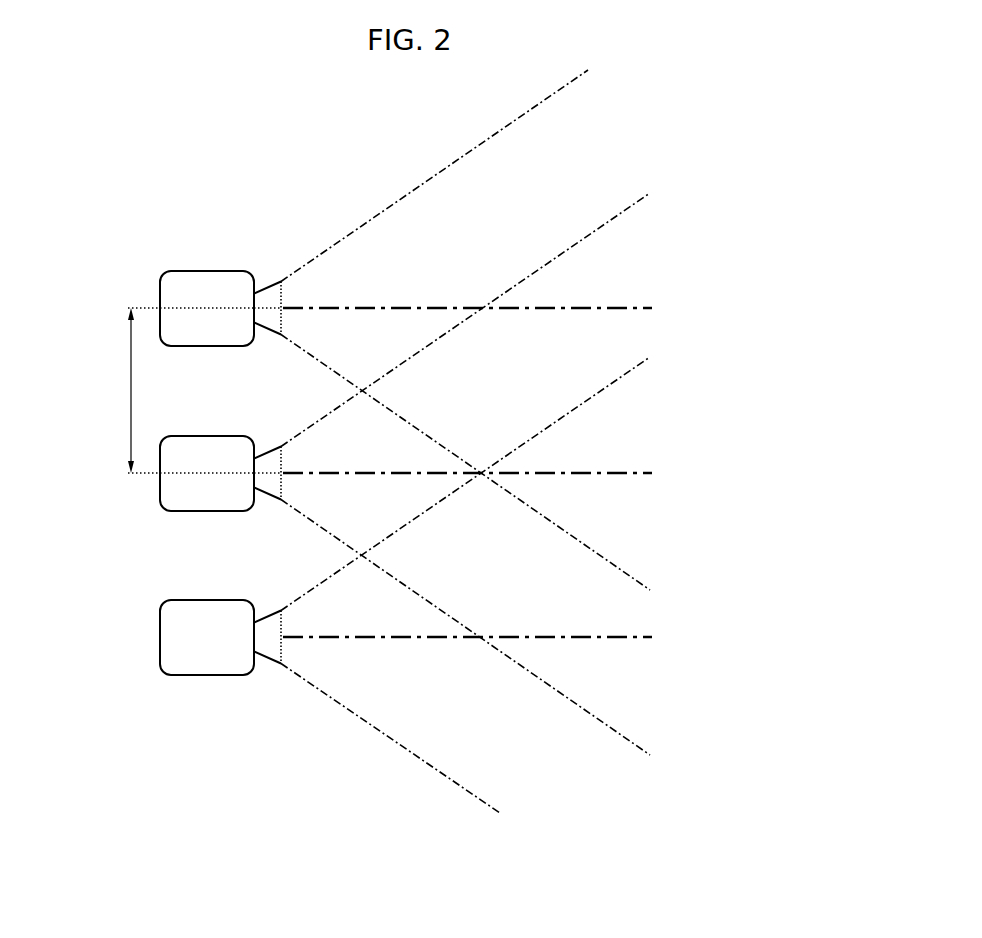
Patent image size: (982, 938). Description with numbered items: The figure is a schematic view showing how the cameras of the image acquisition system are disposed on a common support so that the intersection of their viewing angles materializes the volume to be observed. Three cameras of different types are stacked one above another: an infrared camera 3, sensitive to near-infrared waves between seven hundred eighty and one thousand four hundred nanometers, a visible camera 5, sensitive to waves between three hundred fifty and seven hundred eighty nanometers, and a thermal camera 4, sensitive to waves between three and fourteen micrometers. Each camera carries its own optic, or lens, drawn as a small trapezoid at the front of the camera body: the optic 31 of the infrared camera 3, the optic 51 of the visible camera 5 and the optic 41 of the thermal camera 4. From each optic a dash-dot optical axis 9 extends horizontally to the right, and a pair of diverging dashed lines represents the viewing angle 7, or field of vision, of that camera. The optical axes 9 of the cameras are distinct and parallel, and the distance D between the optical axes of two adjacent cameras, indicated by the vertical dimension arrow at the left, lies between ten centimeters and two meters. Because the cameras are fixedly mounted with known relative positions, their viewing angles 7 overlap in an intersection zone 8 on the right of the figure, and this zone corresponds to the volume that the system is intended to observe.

The infrared camera 3 is at (197, 300).
The optic of infrared camera 31 is at (263, 297).
The visible camera 5 is at (205, 458).
The optic of visible camera 51 is at (270, 465).
The thermal camera 4 is at (208, 627).
The optic of thermal camera 41 is at (265, 625).
The viewing angle 7 is at (308, 685).
The optical axis 9 is at (378, 637).
The intersection zone 8 is at (615, 438).
The distance between optical axes D is at (130, 392).